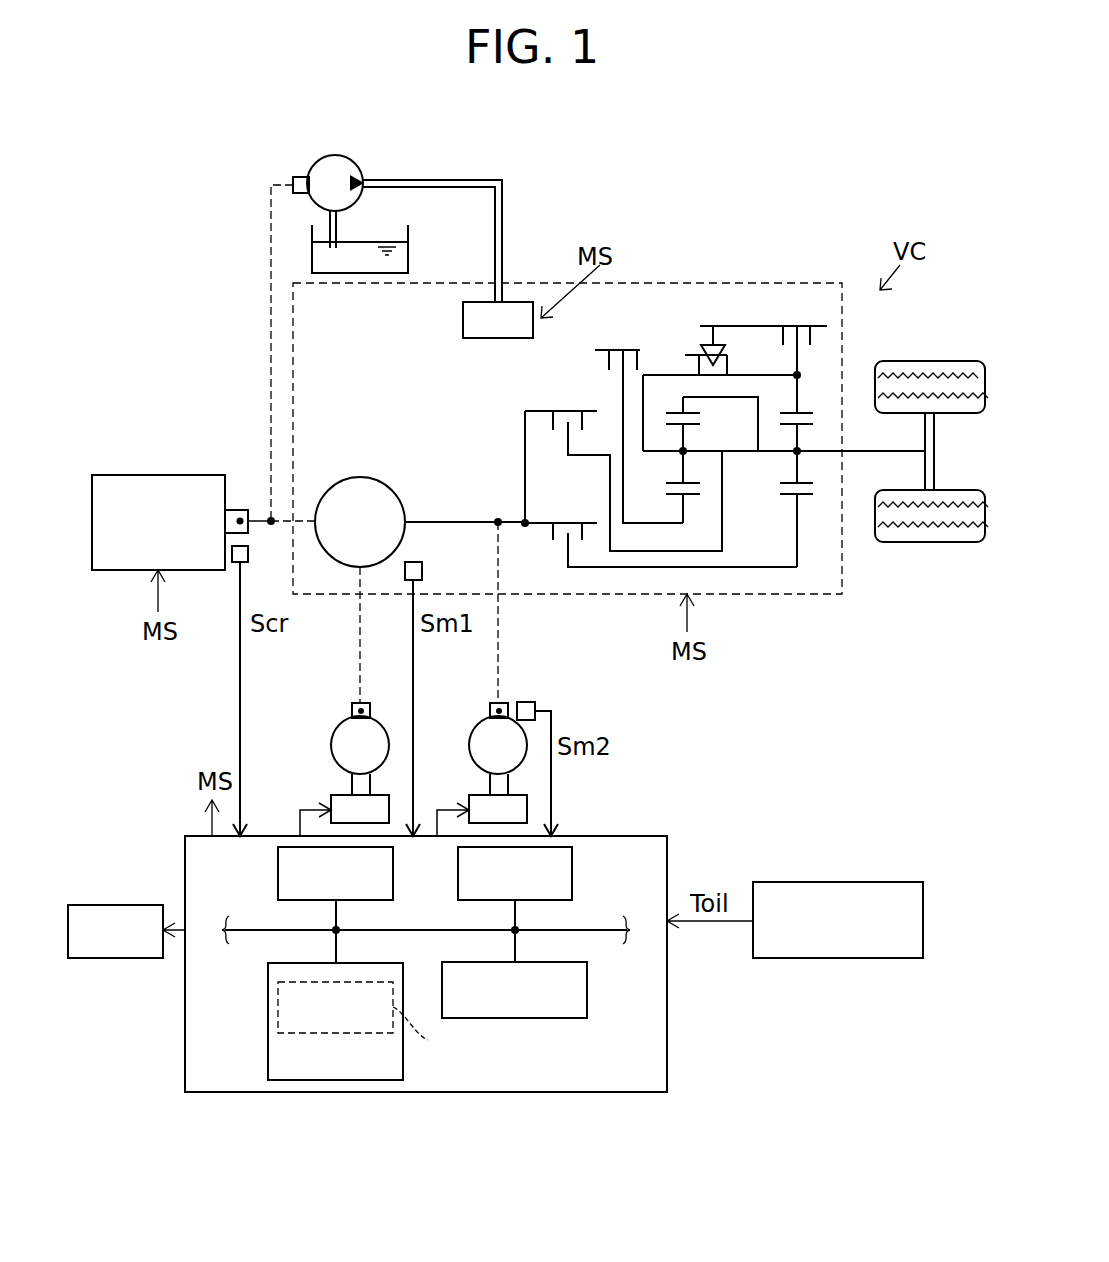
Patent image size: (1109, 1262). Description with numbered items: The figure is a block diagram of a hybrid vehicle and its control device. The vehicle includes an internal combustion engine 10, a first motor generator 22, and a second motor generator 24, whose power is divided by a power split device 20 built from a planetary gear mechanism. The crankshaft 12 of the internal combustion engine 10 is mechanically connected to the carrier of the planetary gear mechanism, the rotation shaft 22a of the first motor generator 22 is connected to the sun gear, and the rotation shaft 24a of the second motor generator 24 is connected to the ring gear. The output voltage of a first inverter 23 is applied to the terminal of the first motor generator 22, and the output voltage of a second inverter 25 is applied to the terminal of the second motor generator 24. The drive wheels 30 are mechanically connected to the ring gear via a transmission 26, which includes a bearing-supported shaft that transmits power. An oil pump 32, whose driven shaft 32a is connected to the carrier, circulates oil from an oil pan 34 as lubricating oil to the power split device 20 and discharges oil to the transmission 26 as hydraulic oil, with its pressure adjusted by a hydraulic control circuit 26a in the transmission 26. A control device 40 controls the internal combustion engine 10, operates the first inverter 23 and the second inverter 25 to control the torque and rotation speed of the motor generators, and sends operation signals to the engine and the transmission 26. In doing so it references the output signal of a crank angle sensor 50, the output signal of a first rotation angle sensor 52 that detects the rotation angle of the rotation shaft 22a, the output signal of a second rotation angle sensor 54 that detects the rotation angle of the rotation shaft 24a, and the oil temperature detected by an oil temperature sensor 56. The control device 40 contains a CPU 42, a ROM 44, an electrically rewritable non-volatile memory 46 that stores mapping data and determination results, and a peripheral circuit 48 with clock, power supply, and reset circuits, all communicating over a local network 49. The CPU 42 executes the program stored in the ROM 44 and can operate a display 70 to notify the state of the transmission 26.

The internal combustion engine 10 is at (158, 475).
The crankshaft 12 is at (240, 510).
The power split device 20 is at (400, 494).
The first motor generator 22 is at (331, 745).
The rotation shaft of the first motor generator 22a is at (352, 710).
The first inverter 23 is at (389, 810).
The second motor generator 24 is at (471, 733).
The rotation shaft of the second motor generator 24a is at (493, 703).
The second inverter 25 is at (527, 810).
The transmission 26 is at (802, 276).
The hydraulic control circuit 26a is at (522, 302).
The drive wheels 30 is at (932, 361).
The oil pump 32 is at (345, 156).
The driven shaft of the oil pump 32a is at (302, 177).
The oil pan 34 is at (410, 256).
The control device 40 is at (633, 836).
The CPU 42 is at (393, 873).
The ROM 44 is at (572, 873).
The memory 46 is at (375, 963).
The peripheral circuit 48 is at (540, 962).
The local network 49 is at (560, 930).
The crank angle sensor 50 is at (240, 563).
The first rotation angle sensor 52 is at (422, 571).
The second rotation angle sensor 54 is at (528, 702).
The oil temperature sensor 56 is at (925, 921).
The display 70 is at (108, 905).